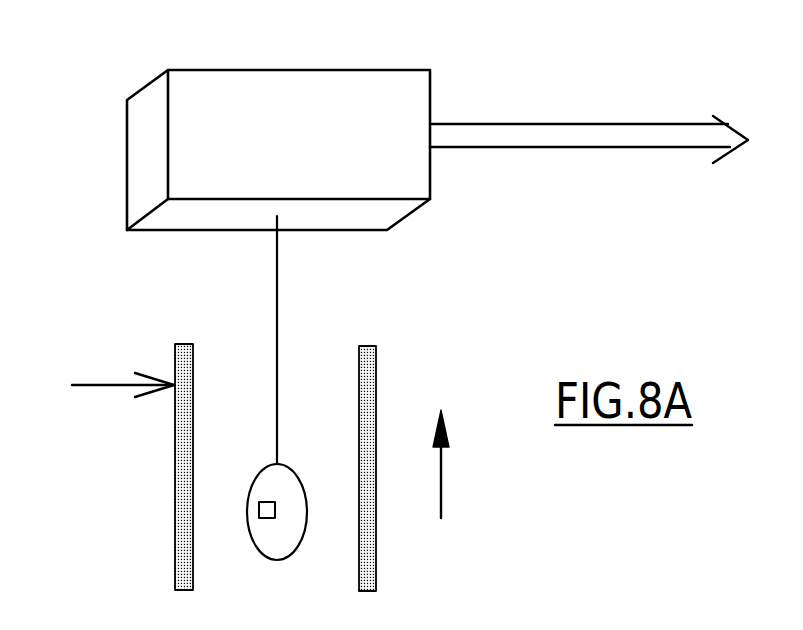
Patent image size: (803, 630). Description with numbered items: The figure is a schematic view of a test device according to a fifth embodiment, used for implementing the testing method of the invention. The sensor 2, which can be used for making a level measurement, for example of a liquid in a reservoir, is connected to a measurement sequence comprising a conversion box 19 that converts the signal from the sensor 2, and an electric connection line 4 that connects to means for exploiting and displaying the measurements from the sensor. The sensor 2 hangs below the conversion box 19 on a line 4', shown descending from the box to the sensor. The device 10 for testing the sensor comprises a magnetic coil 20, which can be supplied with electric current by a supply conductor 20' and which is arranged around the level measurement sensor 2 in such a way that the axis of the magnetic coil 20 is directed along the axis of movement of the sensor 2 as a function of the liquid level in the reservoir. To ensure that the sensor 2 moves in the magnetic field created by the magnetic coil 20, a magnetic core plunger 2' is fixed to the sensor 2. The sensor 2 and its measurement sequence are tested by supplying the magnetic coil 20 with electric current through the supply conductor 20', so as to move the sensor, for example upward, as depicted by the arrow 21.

The conversion box 19 is at (225, 70).
The electric connection line 4 is at (589, 117).
The suspension line 4' is at (306, 340).
The sensor 2 is at (292, 498).
The magnetic core plunger 2' is at (244, 504).
The supply conductor 20' is at (132, 454).
The magnetic coil 20 is at (399, 463).
The arrow 21 is at (442, 478).
The device for testing the sensor 10 is at (113, 507).